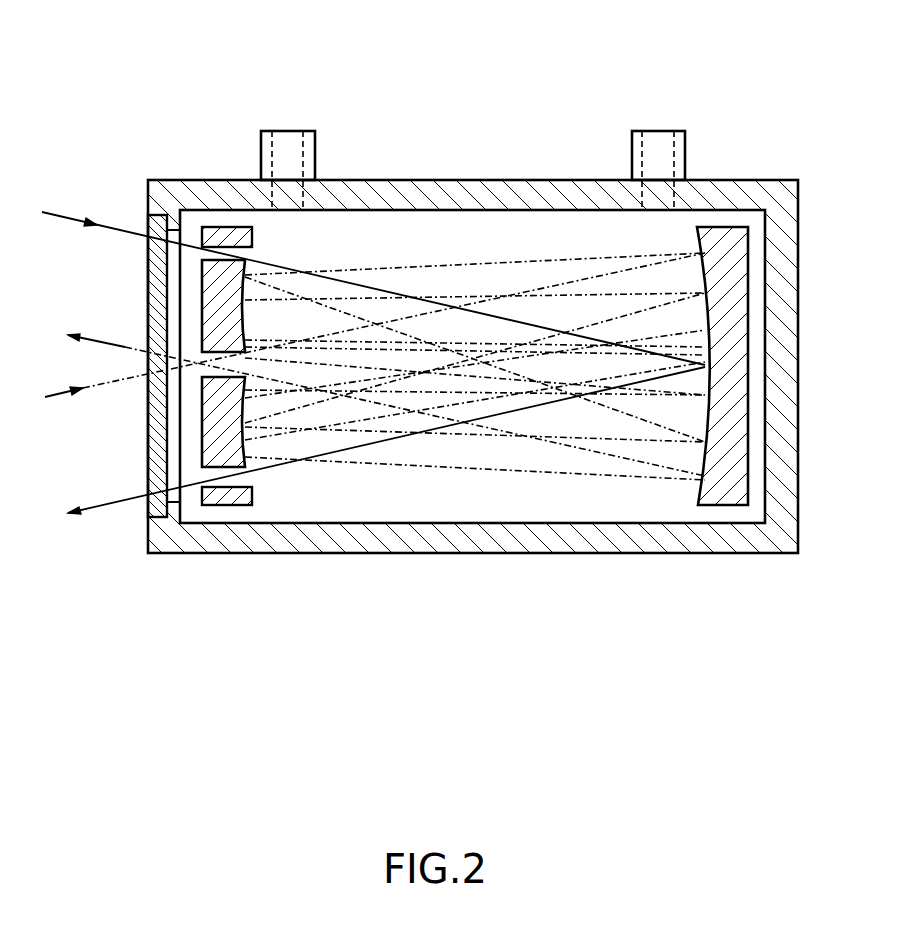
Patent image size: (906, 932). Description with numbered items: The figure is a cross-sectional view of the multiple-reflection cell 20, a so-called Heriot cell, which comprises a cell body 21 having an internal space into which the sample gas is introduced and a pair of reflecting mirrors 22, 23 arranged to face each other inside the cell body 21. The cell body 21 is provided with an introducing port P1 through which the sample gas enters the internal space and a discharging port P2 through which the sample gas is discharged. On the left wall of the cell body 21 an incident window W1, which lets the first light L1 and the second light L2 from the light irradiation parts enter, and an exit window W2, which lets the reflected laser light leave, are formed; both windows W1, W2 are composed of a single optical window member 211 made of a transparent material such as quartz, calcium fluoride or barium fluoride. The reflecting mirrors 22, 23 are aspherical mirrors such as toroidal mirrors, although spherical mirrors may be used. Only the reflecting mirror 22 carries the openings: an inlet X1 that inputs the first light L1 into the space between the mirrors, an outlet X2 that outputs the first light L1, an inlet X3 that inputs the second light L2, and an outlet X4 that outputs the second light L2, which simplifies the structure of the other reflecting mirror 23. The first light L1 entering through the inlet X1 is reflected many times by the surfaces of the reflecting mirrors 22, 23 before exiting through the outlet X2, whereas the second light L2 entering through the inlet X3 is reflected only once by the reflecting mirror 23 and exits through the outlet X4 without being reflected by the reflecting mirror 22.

The multiple-reflection cell 20 is at (390, 125).
The cell body 21 is at (410, 317).
The optical window member 211 is at (95, 366).
The reflecting mirror 22 is at (284, 435).
The reflecting mirror 23 is at (722, 505).
The introducing port P1 is at (287, 128).
The discharging port P2 is at (656, 128).
The first light L1 is at (48, 393).
The second light L2 is at (67, 214).
The incident window W1 is at (95, 366).
The exit window W2 is at (148, 437).
The inlet X1 is at (284, 363).
The outlet X2 is at (240, 364).
The inlet X3 is at (250, 253).
The outlet X4 is at (248, 481).